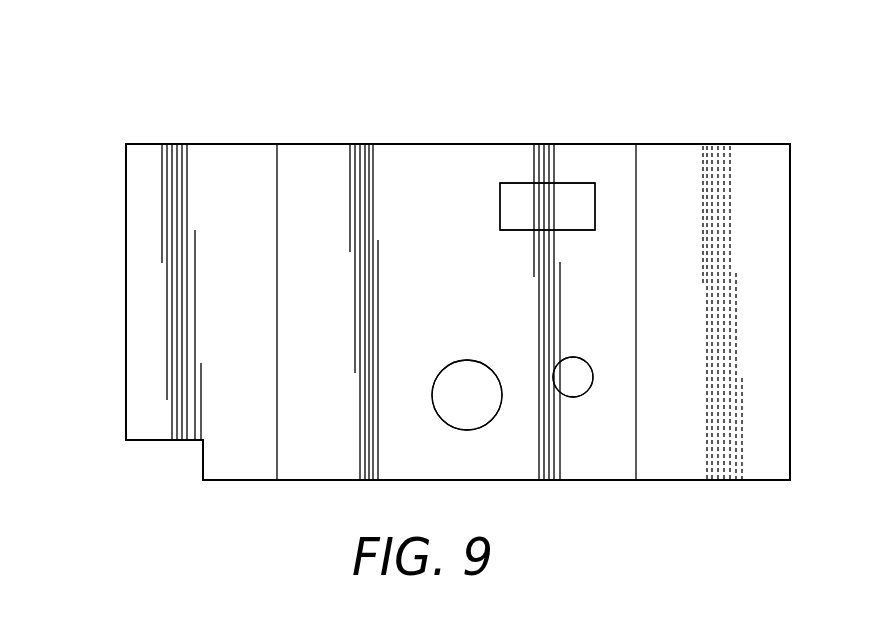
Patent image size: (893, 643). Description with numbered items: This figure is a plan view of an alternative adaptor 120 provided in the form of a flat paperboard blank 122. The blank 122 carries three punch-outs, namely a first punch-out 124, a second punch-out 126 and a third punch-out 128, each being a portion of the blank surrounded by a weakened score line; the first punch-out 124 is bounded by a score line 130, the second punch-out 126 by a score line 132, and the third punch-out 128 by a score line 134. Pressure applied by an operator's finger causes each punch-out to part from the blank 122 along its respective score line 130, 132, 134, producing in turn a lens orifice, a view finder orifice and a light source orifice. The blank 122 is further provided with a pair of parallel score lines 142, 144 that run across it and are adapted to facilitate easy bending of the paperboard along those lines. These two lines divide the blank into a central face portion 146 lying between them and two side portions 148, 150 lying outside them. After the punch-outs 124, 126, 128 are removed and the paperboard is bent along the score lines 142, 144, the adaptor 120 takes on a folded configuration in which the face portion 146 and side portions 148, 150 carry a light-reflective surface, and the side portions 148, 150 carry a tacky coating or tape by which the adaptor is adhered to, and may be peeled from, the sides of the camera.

The adaptor 120 is at (102, 106).
The paperboard blank 122 is at (232, 158).
The first punch-out 124 is at (468, 382).
The second punch-out 126 is at (577, 373).
The third punch-out 128 is at (577, 195).
The score line 130 is at (440, 377).
The score line 132 is at (580, 398).
The score line 134 is at (515, 182).
The score line 142 is at (280, 170).
The score line 144 is at (638, 183).
The central face portion 146 is at (490, 455).
The side portion 148 is at (252, 457).
The side portion 150 is at (682, 463).